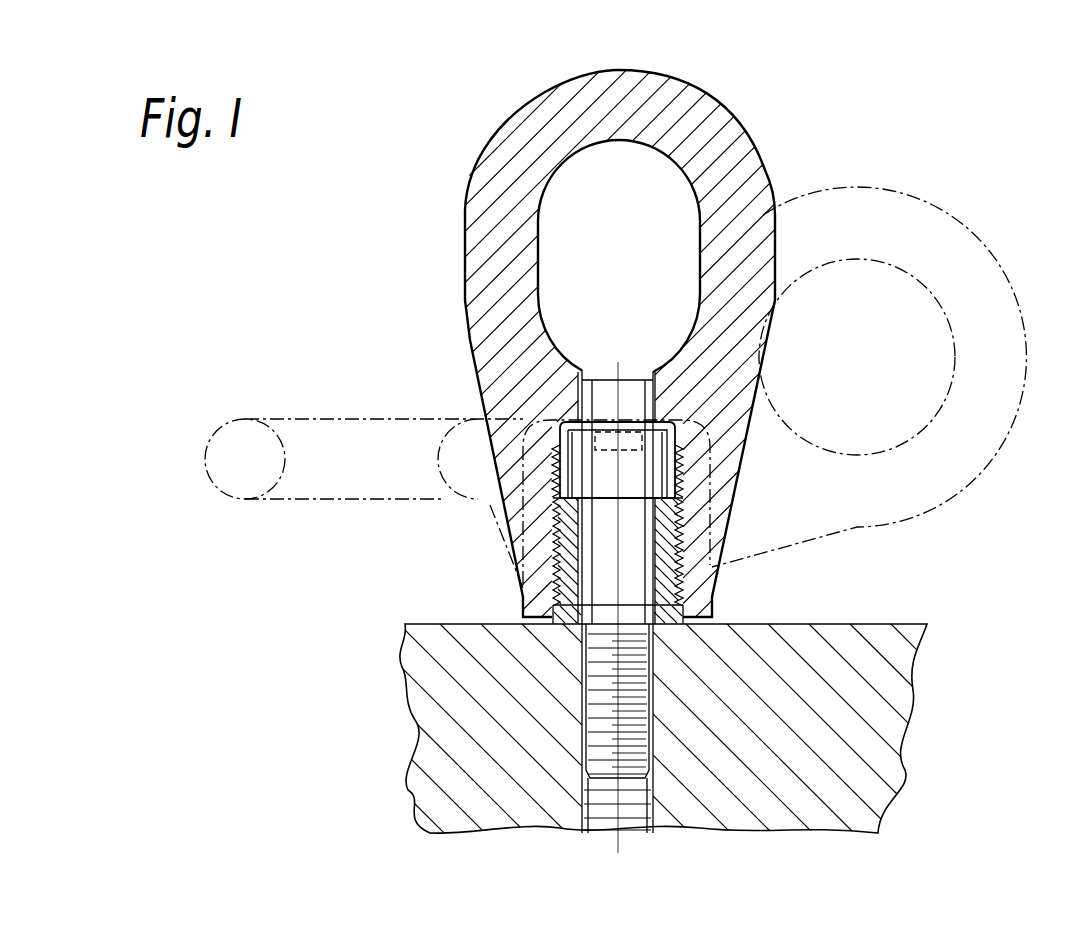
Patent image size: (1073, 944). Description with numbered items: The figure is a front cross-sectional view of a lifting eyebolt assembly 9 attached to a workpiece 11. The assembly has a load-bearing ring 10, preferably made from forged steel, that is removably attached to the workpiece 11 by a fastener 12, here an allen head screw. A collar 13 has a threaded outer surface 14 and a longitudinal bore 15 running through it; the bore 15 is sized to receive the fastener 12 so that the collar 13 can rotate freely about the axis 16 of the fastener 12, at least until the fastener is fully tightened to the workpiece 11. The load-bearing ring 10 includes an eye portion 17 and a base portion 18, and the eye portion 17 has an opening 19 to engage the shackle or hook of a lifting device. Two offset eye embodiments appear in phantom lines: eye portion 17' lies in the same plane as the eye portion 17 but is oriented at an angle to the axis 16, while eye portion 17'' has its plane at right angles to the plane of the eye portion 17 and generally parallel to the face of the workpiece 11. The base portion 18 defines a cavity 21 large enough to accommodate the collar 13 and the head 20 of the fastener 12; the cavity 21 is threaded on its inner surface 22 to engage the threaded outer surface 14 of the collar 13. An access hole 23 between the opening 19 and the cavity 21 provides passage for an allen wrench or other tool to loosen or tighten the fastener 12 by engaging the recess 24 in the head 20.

The lifting eyebolt assembly 9 is at (484, 120).
The load-bearing ring 10 is at (777, 263).
The workpiece 11 is at (883, 625).
The fastener 12 is at (625, 563).
The collar 13 is at (710, 497).
The threaded outer surface 14 is at (557, 597).
The longitudinal bore 15 is at (647, 603).
The axis 16 is at (620, 362).
The eye portion 17 is at (584, 333).
The eye portion 17' is at (777, 351).
The eye portion 17'' is at (364, 471).
The base portion 18 is at (722, 467).
The opening 19 is at (540, 238).
The head 20 is at (680, 460).
The cavity 21 is at (573, 438).
The inner surface 22 is at (557, 527).
The access hole 23 is at (675, 392).
The recess 24 is at (628, 453).